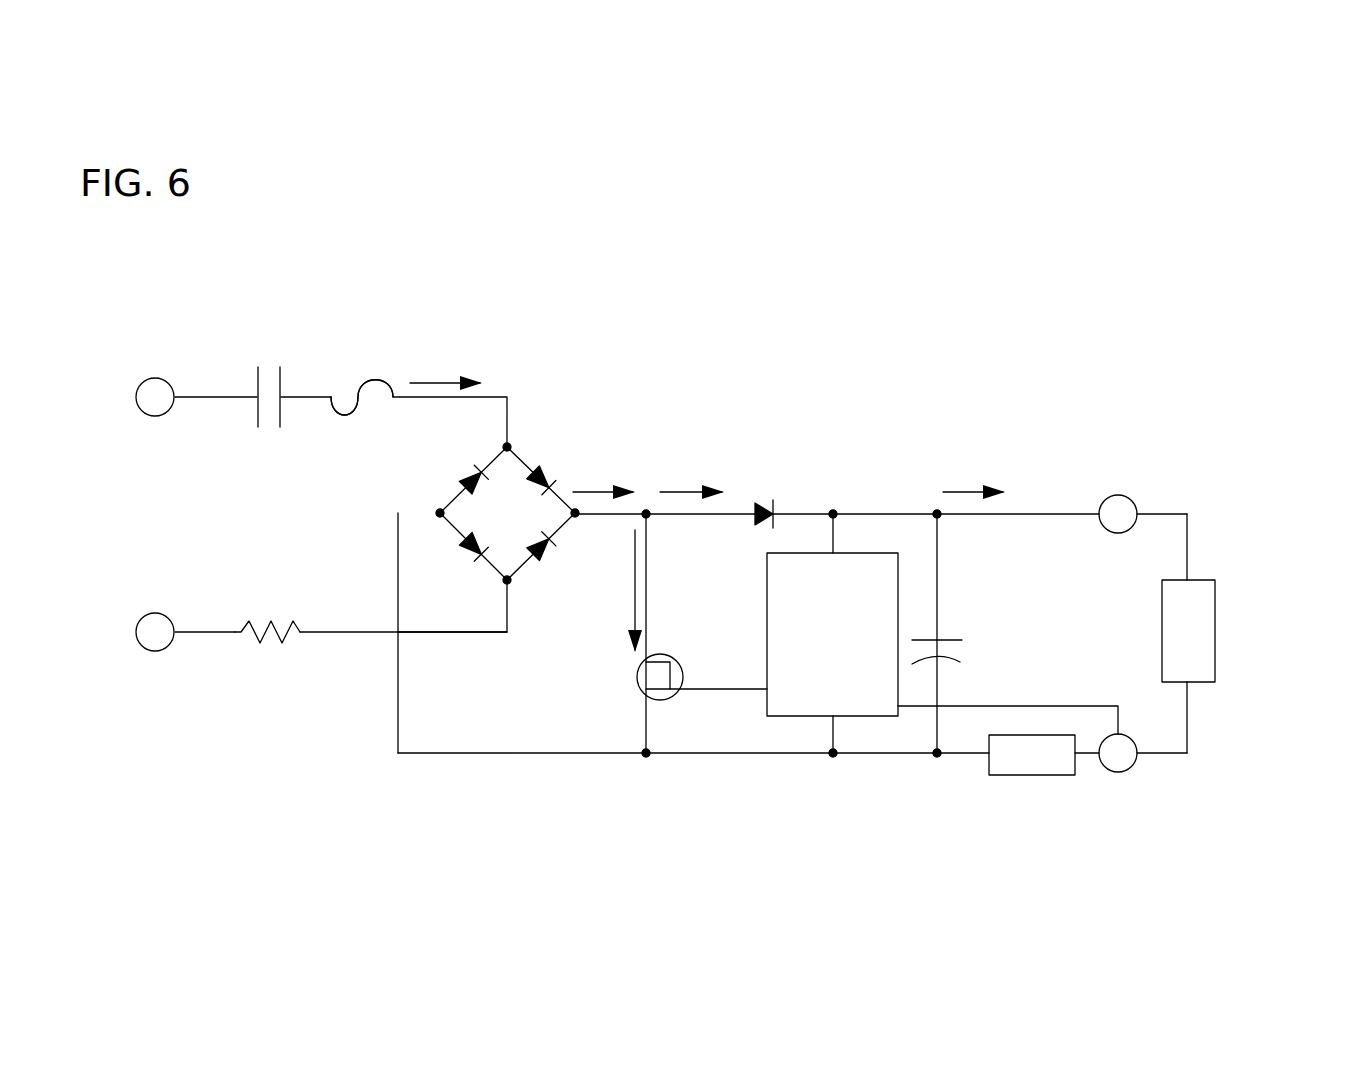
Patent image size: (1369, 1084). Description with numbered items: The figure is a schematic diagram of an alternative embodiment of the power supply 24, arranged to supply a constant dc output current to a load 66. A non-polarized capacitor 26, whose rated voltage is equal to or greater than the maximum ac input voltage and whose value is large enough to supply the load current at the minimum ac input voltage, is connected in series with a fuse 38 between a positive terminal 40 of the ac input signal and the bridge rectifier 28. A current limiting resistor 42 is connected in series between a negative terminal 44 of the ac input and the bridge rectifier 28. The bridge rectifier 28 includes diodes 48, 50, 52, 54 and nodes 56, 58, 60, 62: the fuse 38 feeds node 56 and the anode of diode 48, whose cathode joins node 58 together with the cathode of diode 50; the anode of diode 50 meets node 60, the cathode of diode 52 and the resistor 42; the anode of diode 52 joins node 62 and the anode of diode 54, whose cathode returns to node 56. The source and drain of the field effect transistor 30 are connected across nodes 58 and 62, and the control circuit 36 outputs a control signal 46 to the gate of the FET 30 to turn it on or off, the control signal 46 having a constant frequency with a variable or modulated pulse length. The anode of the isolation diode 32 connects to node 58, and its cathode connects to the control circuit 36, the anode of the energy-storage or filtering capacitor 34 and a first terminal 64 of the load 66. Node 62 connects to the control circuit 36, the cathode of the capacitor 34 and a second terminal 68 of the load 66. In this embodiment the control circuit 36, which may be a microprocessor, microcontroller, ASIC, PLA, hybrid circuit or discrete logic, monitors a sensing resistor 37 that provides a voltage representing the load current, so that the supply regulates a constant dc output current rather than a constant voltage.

The power supply 24 is at (975, 390).
The non-polarized capacitor 26 is at (281, 385).
The bridge rectifier 28 is at (492, 532).
The field effect transistor 30 is at (660, 700).
The isolation diode 32 is at (775, 505).
The energy-storage or filtering capacitor 34 is at (952, 663).
The constant-voltage switching control circuit 36 is at (864, 553).
The sensing resistor 37 is at (1035, 775).
The fuse 38 is at (377, 383).
The positive terminal 40 is at (146, 380).
The current limiting resistor 42 is at (300, 622).
The negative terminal 44 is at (137, 625).
The control signal 46 is at (722, 690).
The diode 48 is at (550, 468).
The diode 50 is at (540, 555).
The diode 52 is at (478, 556).
The diode 54 is at (478, 470).
The node 56 is at (508, 446).
The node 58 is at (578, 518).
The node 60 is at (507, 584).
The node 62 is at (438, 512).
The first terminal 64 is at (1127, 496).
The load 66 is at (1216, 592).
The second terminal 68 is at (1130, 770).